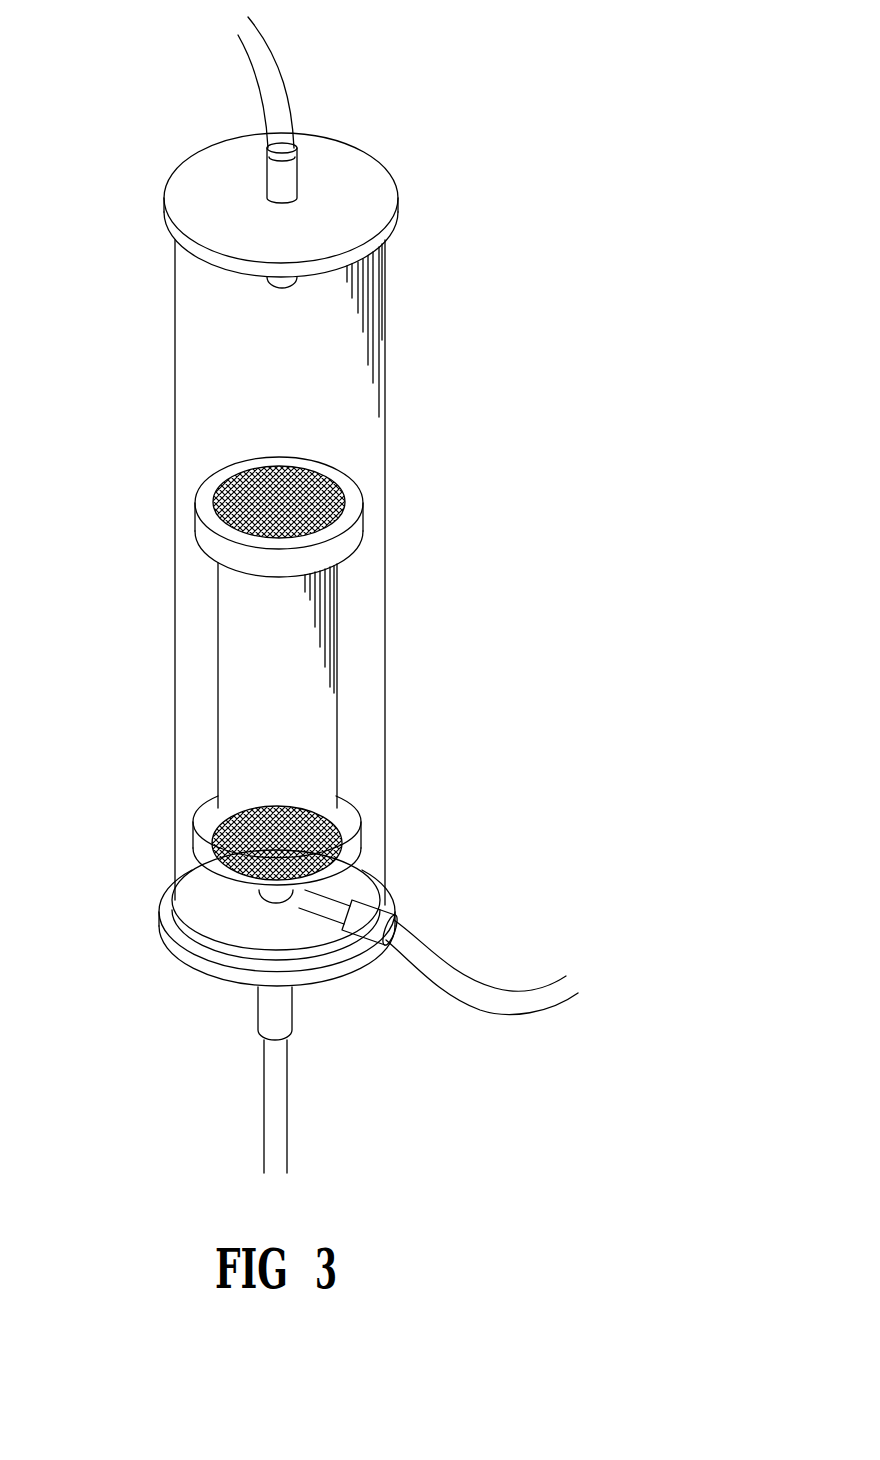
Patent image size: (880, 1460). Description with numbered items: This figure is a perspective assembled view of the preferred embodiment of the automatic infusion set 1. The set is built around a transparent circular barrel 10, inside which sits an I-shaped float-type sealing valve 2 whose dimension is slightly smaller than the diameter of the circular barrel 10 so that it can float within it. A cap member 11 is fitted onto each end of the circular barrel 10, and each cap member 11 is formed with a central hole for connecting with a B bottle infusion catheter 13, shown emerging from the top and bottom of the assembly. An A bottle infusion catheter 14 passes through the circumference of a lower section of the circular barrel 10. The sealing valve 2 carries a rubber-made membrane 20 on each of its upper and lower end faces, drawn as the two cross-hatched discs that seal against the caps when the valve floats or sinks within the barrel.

The automatic infusion set 1 is at (304, 586).
The float-type sealing valve 2 is at (322, 712).
The circular barrel 10 is at (385, 387).
The cap member 11 is at (390, 193).
The B bottle infusion catheter 13 is at (280, 58).
The A bottle infusion catheter 14 is at (461, 997).
The rubber-made membrane 20 is at (225, 495).